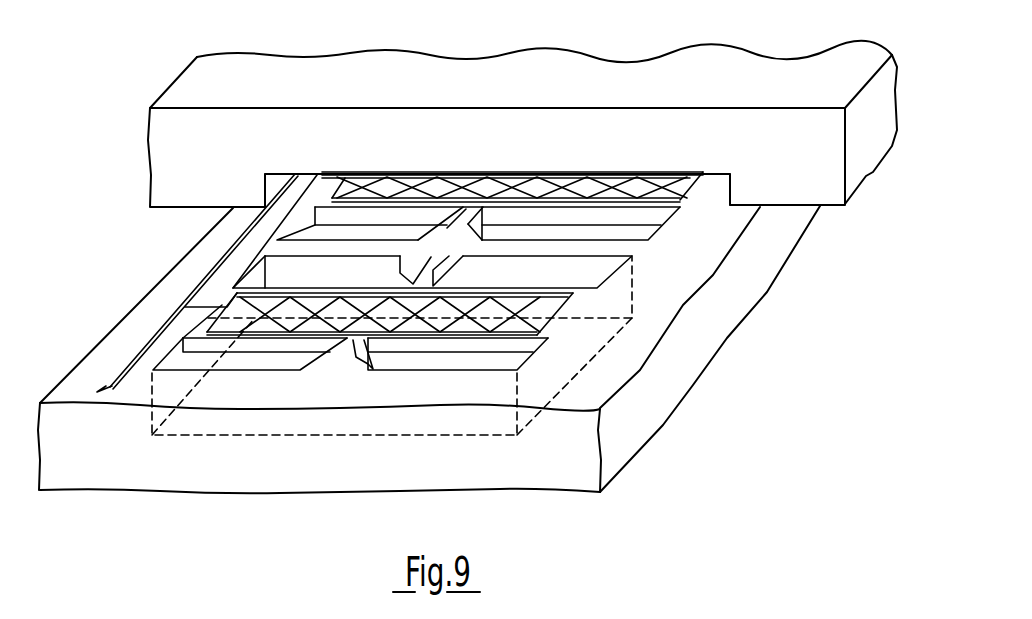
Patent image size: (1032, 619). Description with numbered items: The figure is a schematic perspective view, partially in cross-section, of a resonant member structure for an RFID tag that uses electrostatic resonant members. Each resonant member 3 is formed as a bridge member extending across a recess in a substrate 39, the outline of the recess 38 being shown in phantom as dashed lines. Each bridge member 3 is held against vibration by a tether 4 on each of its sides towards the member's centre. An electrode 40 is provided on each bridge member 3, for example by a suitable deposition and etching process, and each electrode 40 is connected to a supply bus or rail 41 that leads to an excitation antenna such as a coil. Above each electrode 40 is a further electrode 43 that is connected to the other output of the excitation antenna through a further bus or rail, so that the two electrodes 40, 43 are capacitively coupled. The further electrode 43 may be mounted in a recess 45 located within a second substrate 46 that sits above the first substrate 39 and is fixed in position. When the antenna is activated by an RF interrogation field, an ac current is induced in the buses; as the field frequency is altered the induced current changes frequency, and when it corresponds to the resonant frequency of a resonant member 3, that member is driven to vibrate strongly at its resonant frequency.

The resonant member 3 is at (624, 210).
The tether 4 is at (455, 220).
The recess outline 38 is at (594, 312).
The substrate 39 is at (746, 286).
The electrode 40 is at (437, 193).
The supply bus/rail 41 is at (208, 273).
The further electrode 43 is at (576, 174).
The recess 45 is at (717, 186).
The second substrate 46 is at (860, 176).